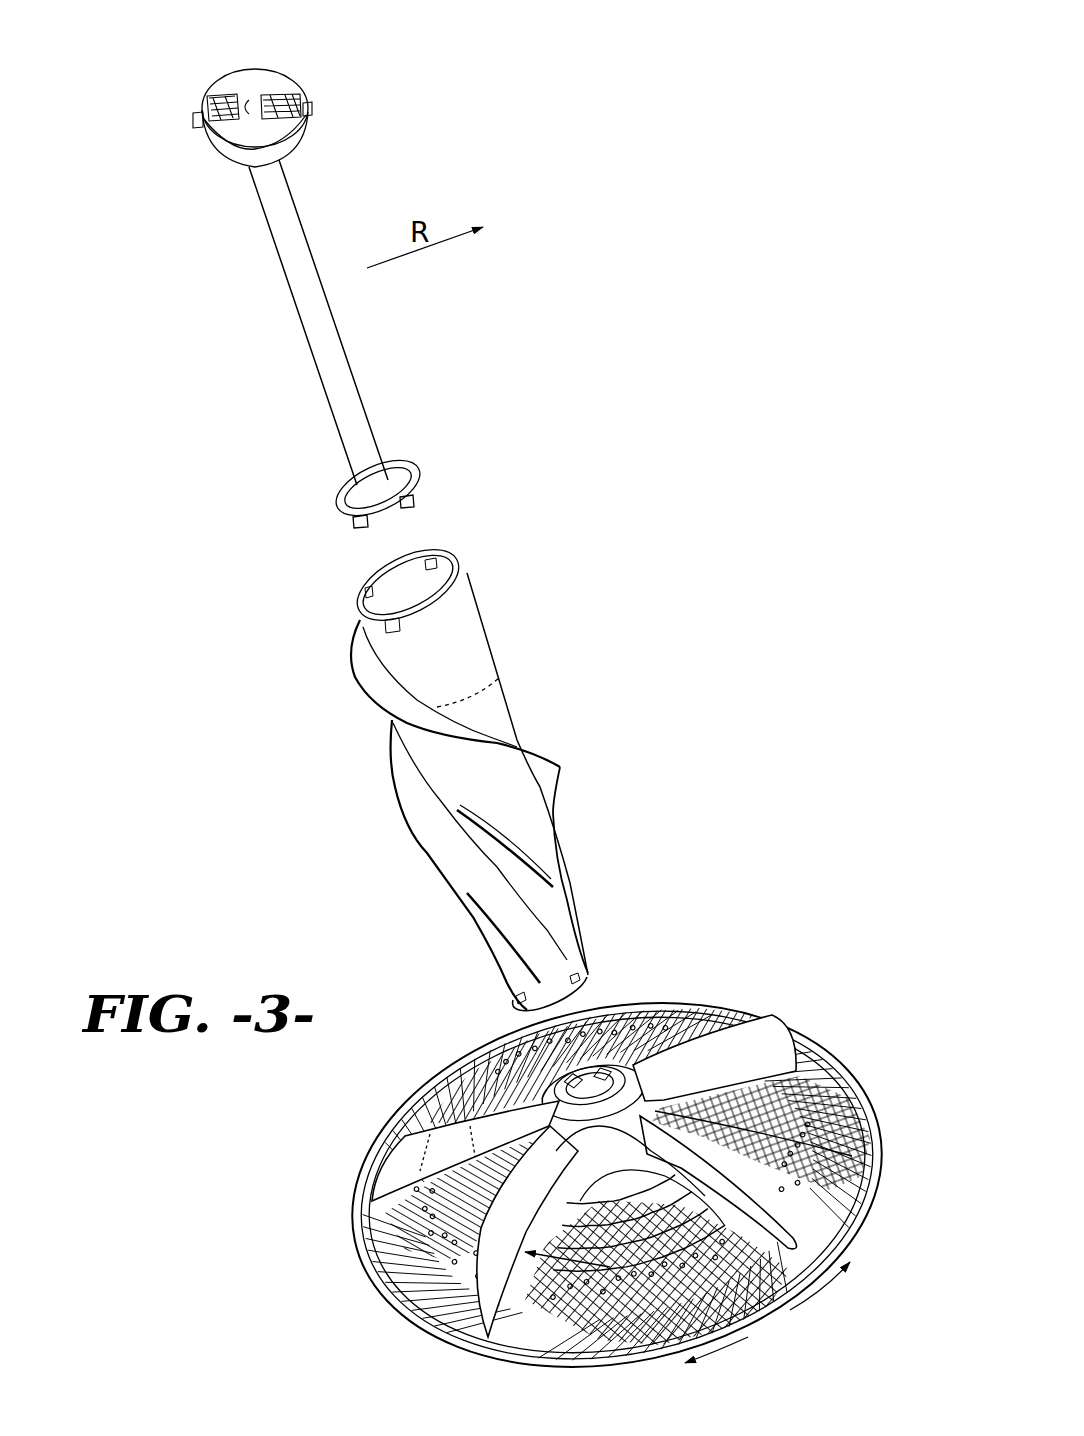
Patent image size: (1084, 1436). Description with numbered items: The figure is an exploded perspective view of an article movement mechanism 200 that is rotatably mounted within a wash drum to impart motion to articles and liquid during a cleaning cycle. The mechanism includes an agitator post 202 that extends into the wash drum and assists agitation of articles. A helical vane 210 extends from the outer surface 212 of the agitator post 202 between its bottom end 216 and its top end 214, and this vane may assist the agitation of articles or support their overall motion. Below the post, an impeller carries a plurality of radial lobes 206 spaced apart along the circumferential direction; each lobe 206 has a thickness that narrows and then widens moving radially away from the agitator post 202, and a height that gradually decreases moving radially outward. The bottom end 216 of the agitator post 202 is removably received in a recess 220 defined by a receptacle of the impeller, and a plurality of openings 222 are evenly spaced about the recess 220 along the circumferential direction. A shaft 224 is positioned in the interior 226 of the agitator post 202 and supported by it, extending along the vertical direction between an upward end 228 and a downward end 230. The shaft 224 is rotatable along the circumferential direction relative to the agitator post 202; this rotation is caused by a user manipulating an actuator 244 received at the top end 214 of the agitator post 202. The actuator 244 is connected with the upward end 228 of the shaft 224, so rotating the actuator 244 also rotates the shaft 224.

The article movement mechanism 200 is at (610, 260).
The agitator post 202 is at (467, 627).
The radial lobes 206 is at (733, 1020).
The helical vane 210 is at (543, 770).
The outer surface 212 is at (508, 695).
The top end 214 is at (452, 751).
The bottom end 216 is at (604, 1163).
The recess 220 is at (575, 1076).
The openings 222 is at (477, 1240).
The shaft 224 is at (340, 358).
The interior 226 is at (390, 578).
The upward end 228 is at (337, 280).
The downward end 230 is at (395, 448).
The actuator 244 is at (257, 80).